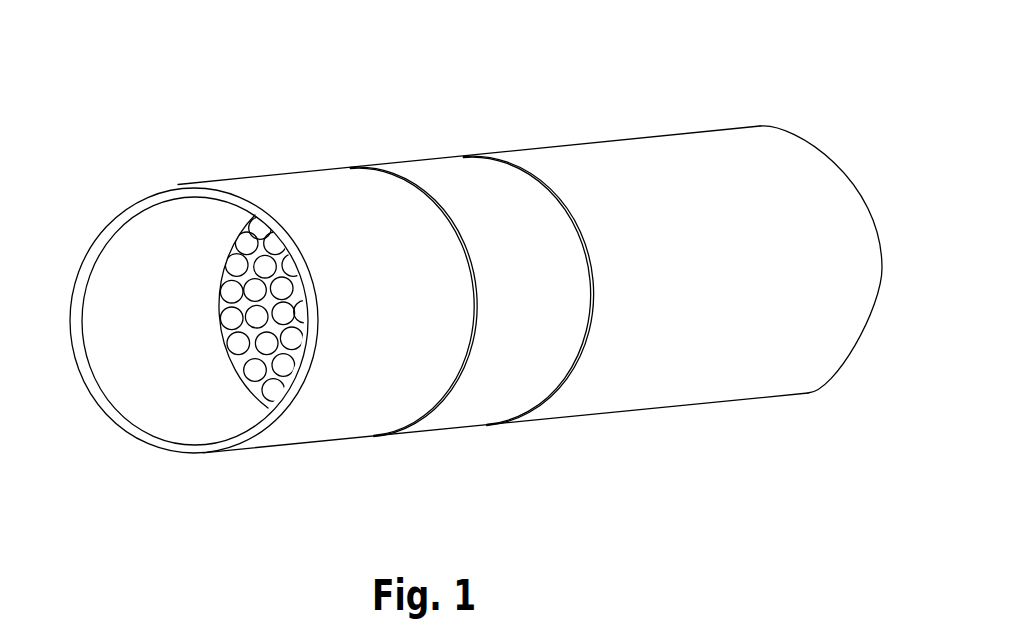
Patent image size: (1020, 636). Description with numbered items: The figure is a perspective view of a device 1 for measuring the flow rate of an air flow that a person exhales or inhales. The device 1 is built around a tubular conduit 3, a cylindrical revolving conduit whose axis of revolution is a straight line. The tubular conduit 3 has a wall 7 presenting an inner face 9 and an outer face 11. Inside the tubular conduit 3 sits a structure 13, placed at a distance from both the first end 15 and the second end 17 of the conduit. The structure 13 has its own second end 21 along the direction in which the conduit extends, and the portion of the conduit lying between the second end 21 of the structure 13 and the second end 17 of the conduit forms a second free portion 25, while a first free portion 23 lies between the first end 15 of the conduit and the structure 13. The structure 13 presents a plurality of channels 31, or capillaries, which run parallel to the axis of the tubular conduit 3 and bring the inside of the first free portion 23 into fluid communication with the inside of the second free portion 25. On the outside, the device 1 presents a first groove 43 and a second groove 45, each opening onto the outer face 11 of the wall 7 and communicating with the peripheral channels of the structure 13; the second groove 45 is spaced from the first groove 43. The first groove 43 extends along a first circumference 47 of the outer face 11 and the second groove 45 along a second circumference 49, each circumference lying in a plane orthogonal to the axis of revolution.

The device 1 is at (393, 127).
The tubular conduit 3 is at (788, 360).
The wall 7 is at (132, 382).
The inner face 9 is at (163, 408).
The outer face 11 is at (317, 418).
The structure 13 is at (232, 267).
The first end 15 is at (875, 362).
The second end 17 is at (62, 352).
The second end 21 is at (170, 371).
The first free portion 23 is at (777, 207).
The second free portion 25 is at (215, 405).
The channels 31 is at (230, 317).
The first groove 43 is at (562, 385).
The second groove 45 is at (443, 403).
The first circumference 47 is at (534, 285).
The second circumference 49 is at (419, 296).